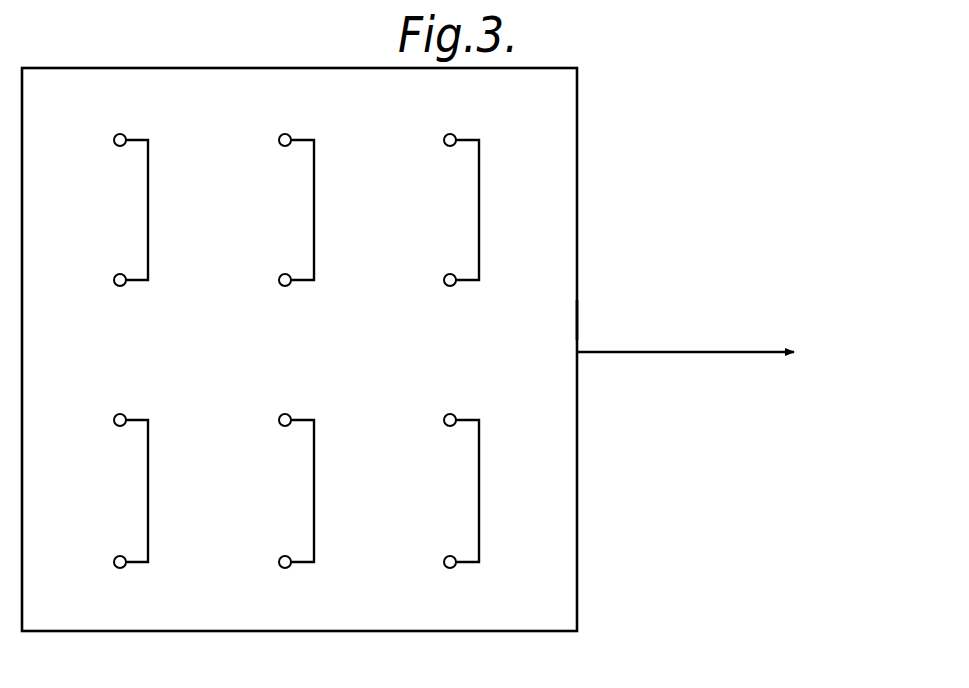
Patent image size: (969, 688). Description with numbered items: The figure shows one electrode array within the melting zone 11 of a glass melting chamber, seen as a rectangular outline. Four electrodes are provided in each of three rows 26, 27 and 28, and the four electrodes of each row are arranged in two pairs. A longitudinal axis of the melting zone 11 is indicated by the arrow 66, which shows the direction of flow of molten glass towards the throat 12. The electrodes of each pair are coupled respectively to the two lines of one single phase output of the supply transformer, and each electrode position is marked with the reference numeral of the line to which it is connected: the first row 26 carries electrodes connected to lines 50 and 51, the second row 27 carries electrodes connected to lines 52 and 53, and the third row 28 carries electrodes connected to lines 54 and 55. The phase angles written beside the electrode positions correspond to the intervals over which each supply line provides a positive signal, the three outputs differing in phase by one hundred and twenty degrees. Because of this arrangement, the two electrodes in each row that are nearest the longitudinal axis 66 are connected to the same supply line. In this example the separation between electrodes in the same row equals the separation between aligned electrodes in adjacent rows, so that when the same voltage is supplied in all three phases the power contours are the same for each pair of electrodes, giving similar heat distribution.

The melting zone 11 is at (92, 66).
The throat 12 is at (573, 326).
The first electrode row 26 is at (141, 578).
The second electrode row 27 is at (306, 578).
The third electrode row 28 is at (471, 578).
The first output line 50 is at (127, 134).
The first output line 51 is at (125, 286).
The second output line 52 is at (290, 286).
The second output line 53 is at (292, 134).
The third output line 54 is at (457, 134).
The third output line 55 is at (455, 286).
The longitudinal axis arrow 66 is at (603, 352).